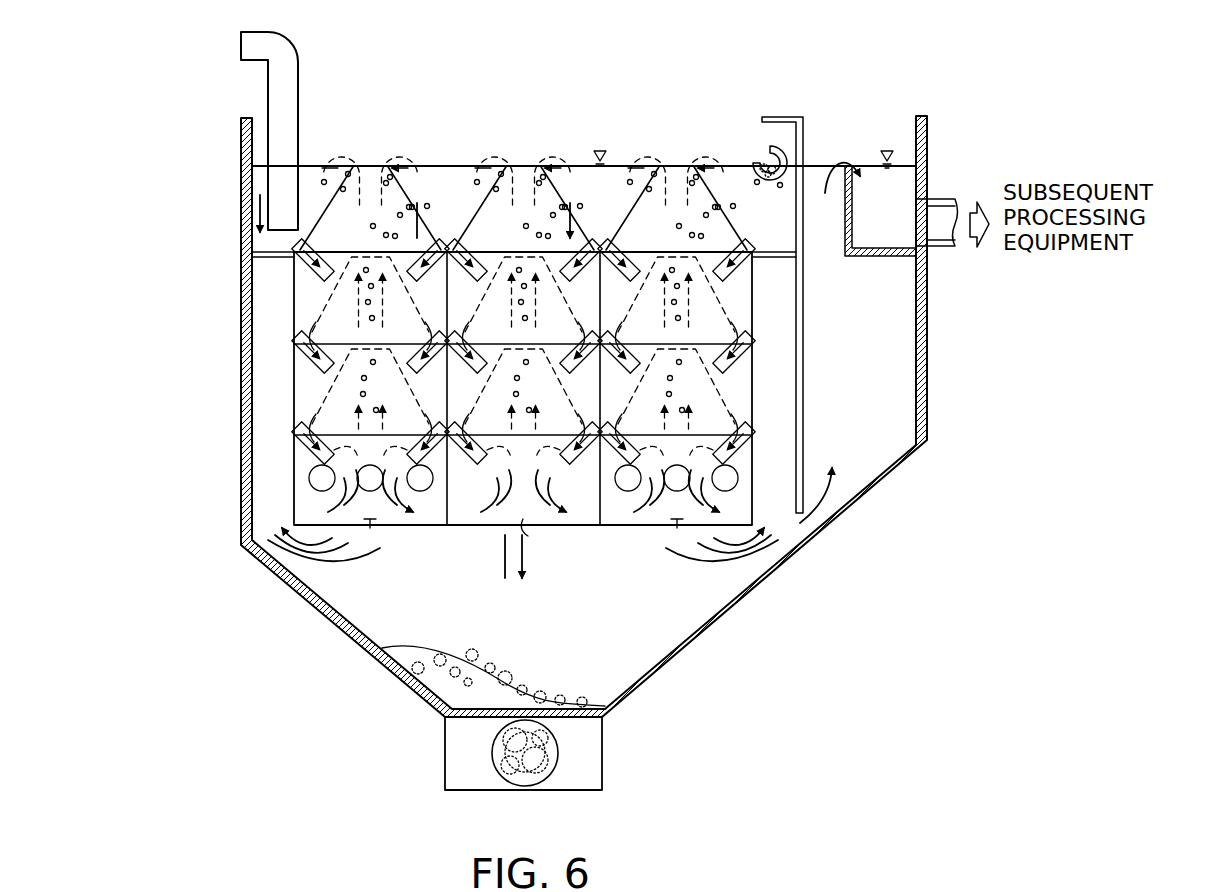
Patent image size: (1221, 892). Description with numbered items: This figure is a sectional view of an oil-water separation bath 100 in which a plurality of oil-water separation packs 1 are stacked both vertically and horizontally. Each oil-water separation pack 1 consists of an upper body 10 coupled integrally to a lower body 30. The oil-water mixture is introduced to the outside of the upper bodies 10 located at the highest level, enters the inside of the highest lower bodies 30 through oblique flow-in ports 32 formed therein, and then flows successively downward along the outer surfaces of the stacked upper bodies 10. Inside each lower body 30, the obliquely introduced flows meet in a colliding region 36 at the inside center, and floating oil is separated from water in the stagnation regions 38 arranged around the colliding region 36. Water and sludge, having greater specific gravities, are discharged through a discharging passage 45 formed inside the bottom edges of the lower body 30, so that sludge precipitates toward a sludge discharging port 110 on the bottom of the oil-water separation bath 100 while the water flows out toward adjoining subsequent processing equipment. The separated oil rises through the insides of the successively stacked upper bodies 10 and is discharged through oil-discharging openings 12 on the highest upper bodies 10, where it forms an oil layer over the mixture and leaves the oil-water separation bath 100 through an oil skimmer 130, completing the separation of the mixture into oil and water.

The oil-water separation pack 1 is at (320, 302).
The upper body 10 is at (470, 167).
The oil-discharging opening 12 is at (371, 173).
The lower body 30 is at (467, 527).
The oblique flow-in port 32 is at (427, 274).
The colliding region 36 is at (399, 528).
The stagnation region 38 is at (309, 479).
The discharging passage 45 is at (384, 535).
The oil-water separation bath 100 is at (240, 368).
The sludge discharging port 110 is at (521, 772).
The oil skimmer 130 is at (768, 145).